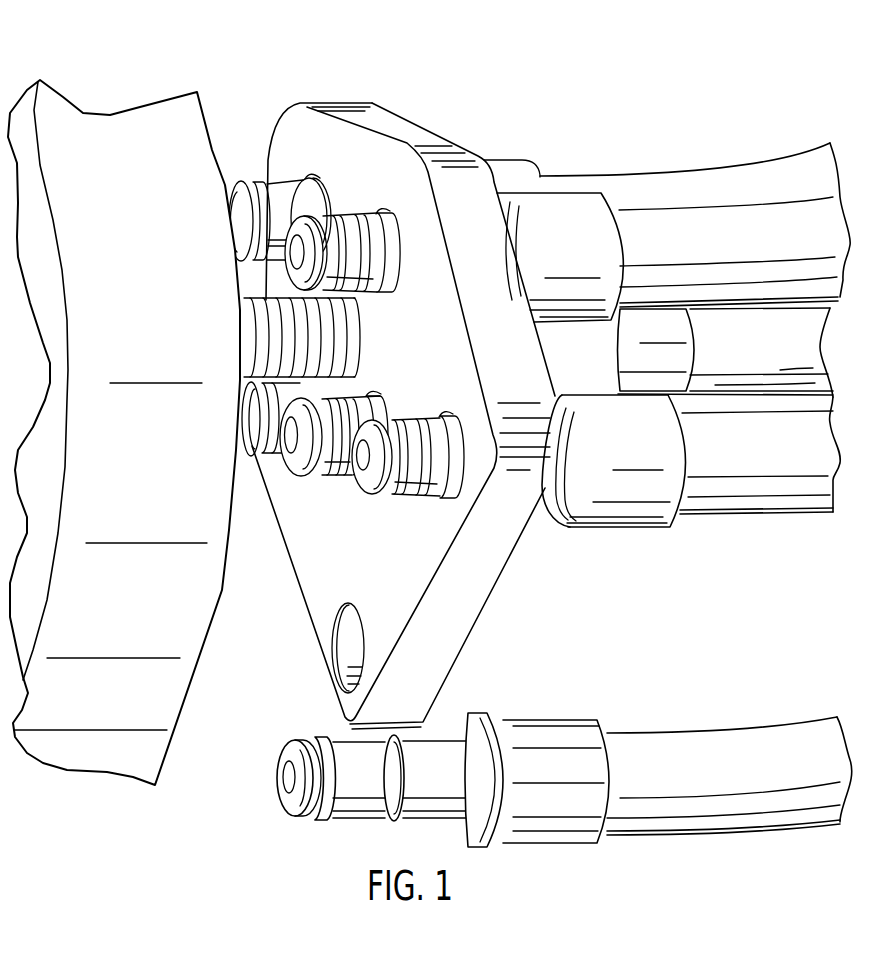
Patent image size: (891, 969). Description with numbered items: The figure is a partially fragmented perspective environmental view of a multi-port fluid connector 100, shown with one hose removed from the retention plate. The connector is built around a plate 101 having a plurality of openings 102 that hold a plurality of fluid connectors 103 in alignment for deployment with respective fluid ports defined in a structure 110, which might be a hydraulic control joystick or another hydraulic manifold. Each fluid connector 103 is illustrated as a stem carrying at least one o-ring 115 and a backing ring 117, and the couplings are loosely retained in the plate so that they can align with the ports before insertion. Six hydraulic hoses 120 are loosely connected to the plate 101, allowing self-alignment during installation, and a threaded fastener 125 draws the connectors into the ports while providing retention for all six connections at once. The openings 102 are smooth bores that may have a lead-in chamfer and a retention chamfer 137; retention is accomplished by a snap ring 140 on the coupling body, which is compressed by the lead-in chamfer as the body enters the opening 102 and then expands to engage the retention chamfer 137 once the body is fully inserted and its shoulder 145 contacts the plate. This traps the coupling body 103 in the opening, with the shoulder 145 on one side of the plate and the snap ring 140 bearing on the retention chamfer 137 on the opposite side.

The multi-port fluid connector 100 is at (498, 106).
The plate 101 is at (331, 103).
The opening 102 is at (331, 603).
The fluid connector 103 is at (381, 834).
The structure 110 is at (158, 107).
The o-ring 115 is at (316, 735).
The backing ring 117 is at (328, 818).
The hydraulic hose 120 is at (762, 825).
The threaded fastener 125 is at (350, 337).
The retention chamfer 137 is at (334, 640).
The snap ring 140 is at (405, 753).
The shoulder 145 is at (498, 838).